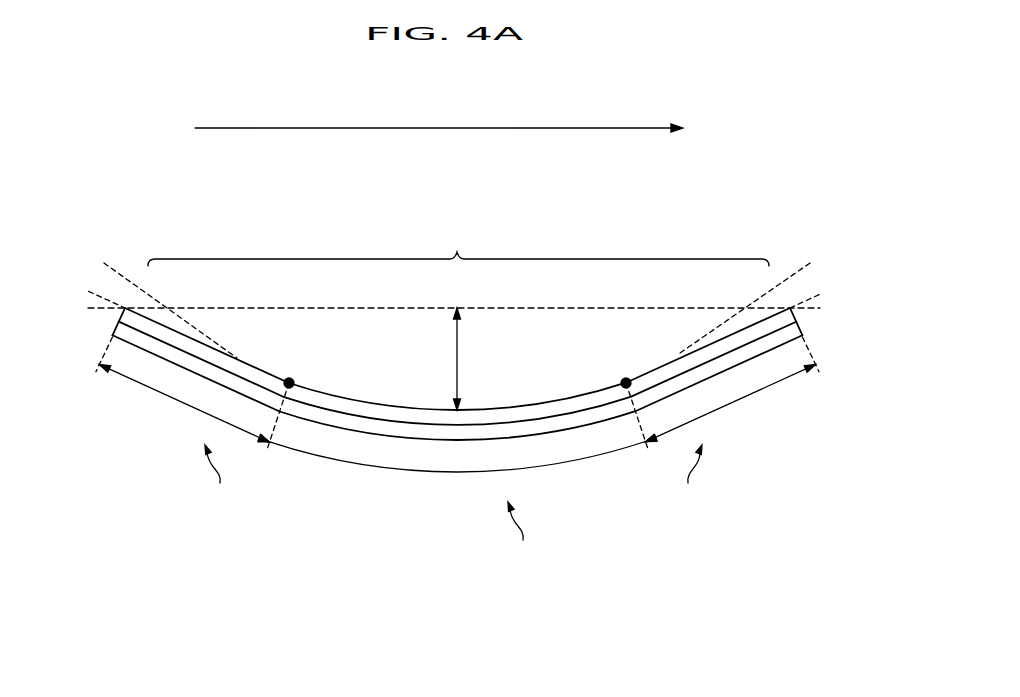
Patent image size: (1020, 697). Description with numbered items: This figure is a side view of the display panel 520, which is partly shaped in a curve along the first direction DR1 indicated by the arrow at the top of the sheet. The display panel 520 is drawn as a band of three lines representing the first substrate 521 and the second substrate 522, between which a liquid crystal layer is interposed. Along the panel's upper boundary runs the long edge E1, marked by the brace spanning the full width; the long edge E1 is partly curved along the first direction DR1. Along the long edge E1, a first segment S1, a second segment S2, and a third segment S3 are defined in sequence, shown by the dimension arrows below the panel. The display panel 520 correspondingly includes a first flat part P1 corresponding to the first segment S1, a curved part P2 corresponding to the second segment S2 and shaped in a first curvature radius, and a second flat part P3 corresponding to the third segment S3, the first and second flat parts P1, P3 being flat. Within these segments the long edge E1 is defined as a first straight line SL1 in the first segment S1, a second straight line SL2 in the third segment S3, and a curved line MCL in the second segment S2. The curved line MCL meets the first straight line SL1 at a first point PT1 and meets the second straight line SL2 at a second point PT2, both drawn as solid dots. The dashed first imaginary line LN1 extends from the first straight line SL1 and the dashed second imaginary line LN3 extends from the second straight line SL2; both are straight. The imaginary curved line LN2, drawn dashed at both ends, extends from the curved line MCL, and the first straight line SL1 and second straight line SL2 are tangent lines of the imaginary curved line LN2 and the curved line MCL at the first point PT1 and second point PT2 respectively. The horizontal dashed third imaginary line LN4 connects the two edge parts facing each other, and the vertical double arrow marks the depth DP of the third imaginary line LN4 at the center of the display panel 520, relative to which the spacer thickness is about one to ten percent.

The first direction DR1 is at (460, 127).
The long edge E1 is at (458, 248).
The first imaginary line LN1 is at (90, 292).
The imaginary curved line LN2 is at (101, 263).
The second imaginary line LN3 is at (820, 293).
The third imaginary line LN4 is at (818, 308).
The first straight line SL1 is at (157, 320).
The second straight line SL2 is at (758, 320).
The display panel 520 is at (458, 353).
The first substrate 521 is at (403, 432).
The second substrate 522 is at (457, 366).
The curved line MCL is at (537, 403).
The first point PT1 is at (290, 378).
The second point PT2 is at (627, 378).
The depth DP is at (471, 359).
The first segment S1 is at (192, 393).
The second segment S2 is at (457, 442).
The third segment S3 is at (733, 389).
The first flat part P1 is at (217, 475).
The curved part P2 is at (521, 531).
The second flat part P3 is at (690, 475).